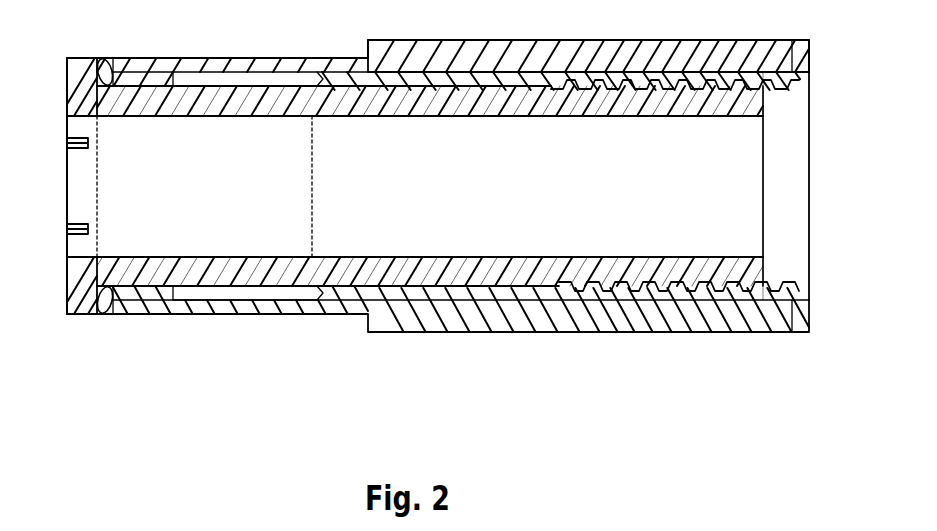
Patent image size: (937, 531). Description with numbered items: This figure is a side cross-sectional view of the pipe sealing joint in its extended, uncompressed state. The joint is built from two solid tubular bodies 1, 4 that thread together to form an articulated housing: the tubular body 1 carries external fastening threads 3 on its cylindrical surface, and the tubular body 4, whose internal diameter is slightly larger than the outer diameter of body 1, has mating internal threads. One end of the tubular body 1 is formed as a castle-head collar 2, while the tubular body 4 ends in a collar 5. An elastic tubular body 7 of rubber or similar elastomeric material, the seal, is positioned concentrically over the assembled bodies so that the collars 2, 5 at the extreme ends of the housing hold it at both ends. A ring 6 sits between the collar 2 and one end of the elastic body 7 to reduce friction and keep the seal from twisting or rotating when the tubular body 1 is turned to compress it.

The tubular body 1 is at (252, 262).
The collar 2 is at (67, 303).
The fastening threads 3 is at (460, 116).
The tubular body 4 is at (813, 42).
The collar 5 is at (800, 170).
The ring 6 is at (103, 58).
The elastic tubular body 7 is at (477, 45).